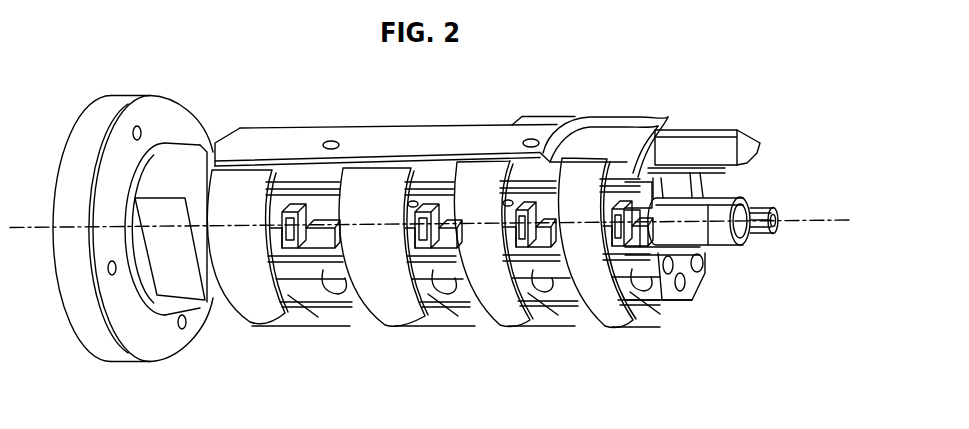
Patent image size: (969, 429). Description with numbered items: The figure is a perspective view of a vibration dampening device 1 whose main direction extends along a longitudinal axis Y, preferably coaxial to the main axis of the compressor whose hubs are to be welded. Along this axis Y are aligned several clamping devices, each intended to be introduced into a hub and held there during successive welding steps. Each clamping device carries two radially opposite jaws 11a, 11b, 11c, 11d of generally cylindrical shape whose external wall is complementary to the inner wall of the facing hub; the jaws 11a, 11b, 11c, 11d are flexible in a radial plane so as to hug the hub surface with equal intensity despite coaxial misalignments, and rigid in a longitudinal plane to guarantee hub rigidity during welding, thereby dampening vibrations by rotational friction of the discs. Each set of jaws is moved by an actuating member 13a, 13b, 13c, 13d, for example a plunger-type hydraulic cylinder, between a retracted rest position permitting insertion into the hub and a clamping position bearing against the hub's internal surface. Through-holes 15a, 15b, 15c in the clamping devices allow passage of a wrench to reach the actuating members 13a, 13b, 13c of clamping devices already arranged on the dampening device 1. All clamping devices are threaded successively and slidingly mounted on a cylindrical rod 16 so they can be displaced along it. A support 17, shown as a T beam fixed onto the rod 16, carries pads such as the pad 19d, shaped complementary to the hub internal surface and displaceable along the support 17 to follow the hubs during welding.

The vibration dampening device 1 is at (318, 73).
The longitudinal axis Y is at (14, 226).
The jaw 11a is at (257, 307).
The jaw 11b is at (397, 310).
The jaw 11c is at (500, 310).
The jaw 11d is at (602, 310).
The actuating member 13a is at (288, 297).
The actuating member 13b is at (430, 297).
The actuating member 13c is at (533, 293).
The actuating member 13d is at (637, 293).
The through-hole 15a is at (686, 286).
The through-hole 15b is at (675, 269).
The through-hole 15c is at (703, 267).
The rod 16 is at (776, 207).
The support 17 is at (445, 127).
The pad 19d is at (602, 124).